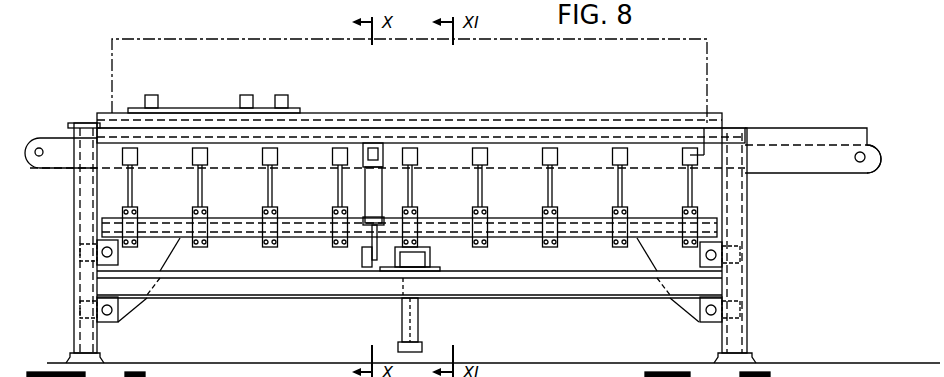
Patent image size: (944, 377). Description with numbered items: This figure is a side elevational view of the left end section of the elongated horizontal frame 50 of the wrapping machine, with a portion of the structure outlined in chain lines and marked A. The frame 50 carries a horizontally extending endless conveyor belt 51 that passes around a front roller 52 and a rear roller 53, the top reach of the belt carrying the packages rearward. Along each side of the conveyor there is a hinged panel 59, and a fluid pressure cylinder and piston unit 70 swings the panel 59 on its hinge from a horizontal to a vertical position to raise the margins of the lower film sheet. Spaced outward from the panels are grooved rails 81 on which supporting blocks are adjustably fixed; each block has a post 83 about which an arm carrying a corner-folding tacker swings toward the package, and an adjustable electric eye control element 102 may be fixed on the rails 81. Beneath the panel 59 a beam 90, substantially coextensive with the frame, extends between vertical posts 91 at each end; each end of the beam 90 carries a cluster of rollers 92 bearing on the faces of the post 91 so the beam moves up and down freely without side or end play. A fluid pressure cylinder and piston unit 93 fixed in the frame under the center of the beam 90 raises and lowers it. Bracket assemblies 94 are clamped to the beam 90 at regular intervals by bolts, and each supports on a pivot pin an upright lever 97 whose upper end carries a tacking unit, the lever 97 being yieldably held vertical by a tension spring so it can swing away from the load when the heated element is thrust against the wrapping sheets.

The sectioned region A is at (712, 69).
The horizontal frame 50 is at (755, 211).
The conveyor belt 51 is at (782, 138).
The front roller 52 is at (873, 145).
The rear roller 53 is at (27, 144).
The panel 59 is at (453, 126).
The fluid pressure cylinder and piston unit 70 is at (366, 188).
The rail 81 is at (344, 0).
The post 83 is at (740, 0).
The beam 90 is at (248, 234).
The vertical post 91 is at (73, 196).
The rollers 92 is at (80, 252).
The fluid pressure cylinder and piston unit 93 is at (420, 327).
The bracket assembly 94 is at (279, 233).
The upright lever 97 is at (203, 192).
The electric eye control element 102 is at (240, 98).